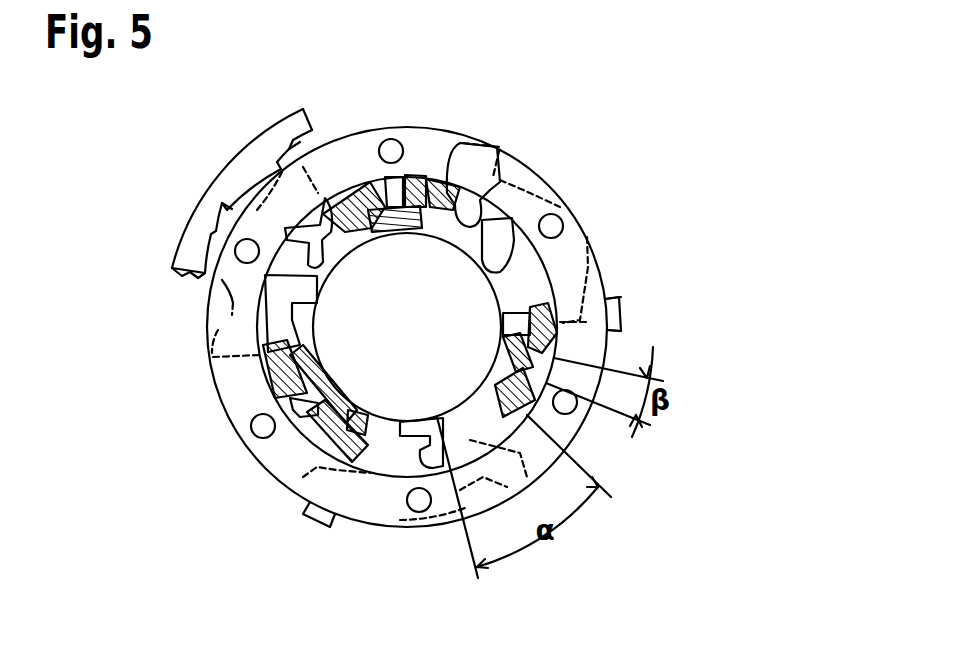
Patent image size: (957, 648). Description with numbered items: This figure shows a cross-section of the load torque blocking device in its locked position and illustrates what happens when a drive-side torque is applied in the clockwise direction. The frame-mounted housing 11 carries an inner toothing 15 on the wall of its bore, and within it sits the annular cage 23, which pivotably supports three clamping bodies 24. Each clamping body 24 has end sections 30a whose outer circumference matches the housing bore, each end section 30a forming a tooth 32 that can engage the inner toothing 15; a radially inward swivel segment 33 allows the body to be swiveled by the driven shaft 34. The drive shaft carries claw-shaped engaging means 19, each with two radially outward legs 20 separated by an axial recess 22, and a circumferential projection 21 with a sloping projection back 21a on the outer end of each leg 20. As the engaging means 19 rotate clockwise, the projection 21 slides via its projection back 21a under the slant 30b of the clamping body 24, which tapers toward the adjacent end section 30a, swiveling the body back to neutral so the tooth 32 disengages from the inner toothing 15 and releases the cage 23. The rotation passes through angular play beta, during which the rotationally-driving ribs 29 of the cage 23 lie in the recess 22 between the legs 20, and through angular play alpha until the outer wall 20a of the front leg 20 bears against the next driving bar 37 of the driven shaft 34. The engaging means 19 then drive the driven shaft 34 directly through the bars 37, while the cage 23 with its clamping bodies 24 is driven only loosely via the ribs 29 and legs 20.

The housing 11 is at (210, 215).
The inner toothing 15 is at (238, 185).
The engaging means 19 is at (545, 440).
The leg 20 is at (428, 175).
The outer wall of leg 20a is at (213, 367).
The projection 21 is at (557, 298).
The projection back 21a is at (448, 190).
The axial recess 22 is at (252, 452).
The annular cage 23 is at (230, 383).
The clamping body 24 is at (210, 232).
The rotationally-driving rib 29 is at (395, 190).
The end section 30a is at (235, 310).
The slant 30b is at (478, 200).
The tooth 32 is at (617, 320).
The swivel segment 33 is at (412, 433).
The driven shaft 34 is at (400, 385).
The driving bar 37 is at (513, 197).